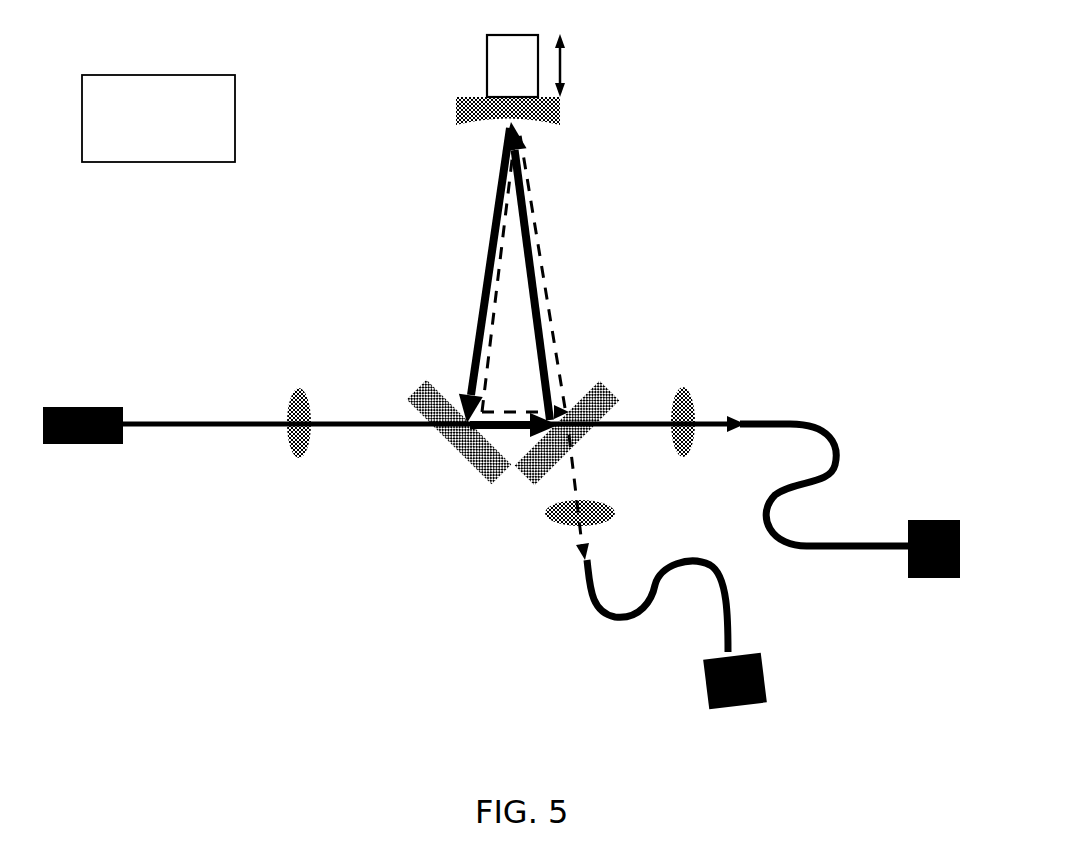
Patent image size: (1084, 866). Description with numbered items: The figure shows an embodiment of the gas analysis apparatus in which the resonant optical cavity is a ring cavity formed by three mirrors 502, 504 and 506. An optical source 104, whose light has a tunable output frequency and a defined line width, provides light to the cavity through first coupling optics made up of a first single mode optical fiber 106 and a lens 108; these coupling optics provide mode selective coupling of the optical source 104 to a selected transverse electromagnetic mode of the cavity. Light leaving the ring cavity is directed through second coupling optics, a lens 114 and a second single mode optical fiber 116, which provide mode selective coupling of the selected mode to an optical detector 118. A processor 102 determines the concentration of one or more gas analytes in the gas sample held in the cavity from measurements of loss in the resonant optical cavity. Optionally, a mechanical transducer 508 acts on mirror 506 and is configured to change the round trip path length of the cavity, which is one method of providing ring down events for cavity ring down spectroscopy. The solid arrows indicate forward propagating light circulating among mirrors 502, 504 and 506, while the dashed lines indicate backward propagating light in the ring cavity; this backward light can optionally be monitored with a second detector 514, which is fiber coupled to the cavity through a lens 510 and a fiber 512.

The processor 102 is at (181, 137).
The optical source 104 is at (78, 447).
The first single mode optical fiber 106 is at (176, 428).
The lens 108 is at (298, 396).
The lens 114 is at (686, 398).
The second single mode optical fiber 116 is at (840, 550).
The optical detector 118 is at (925, 580).
The mirror 502 is at (452, 442).
The mirror 504 is at (598, 379).
The mirror 506 is at (563, 112).
The mechanical transducer 508 is at (496, 66).
The lens 510 is at (560, 525).
The fiber 512 is at (620, 620).
The second detector 514 is at (737, 712).